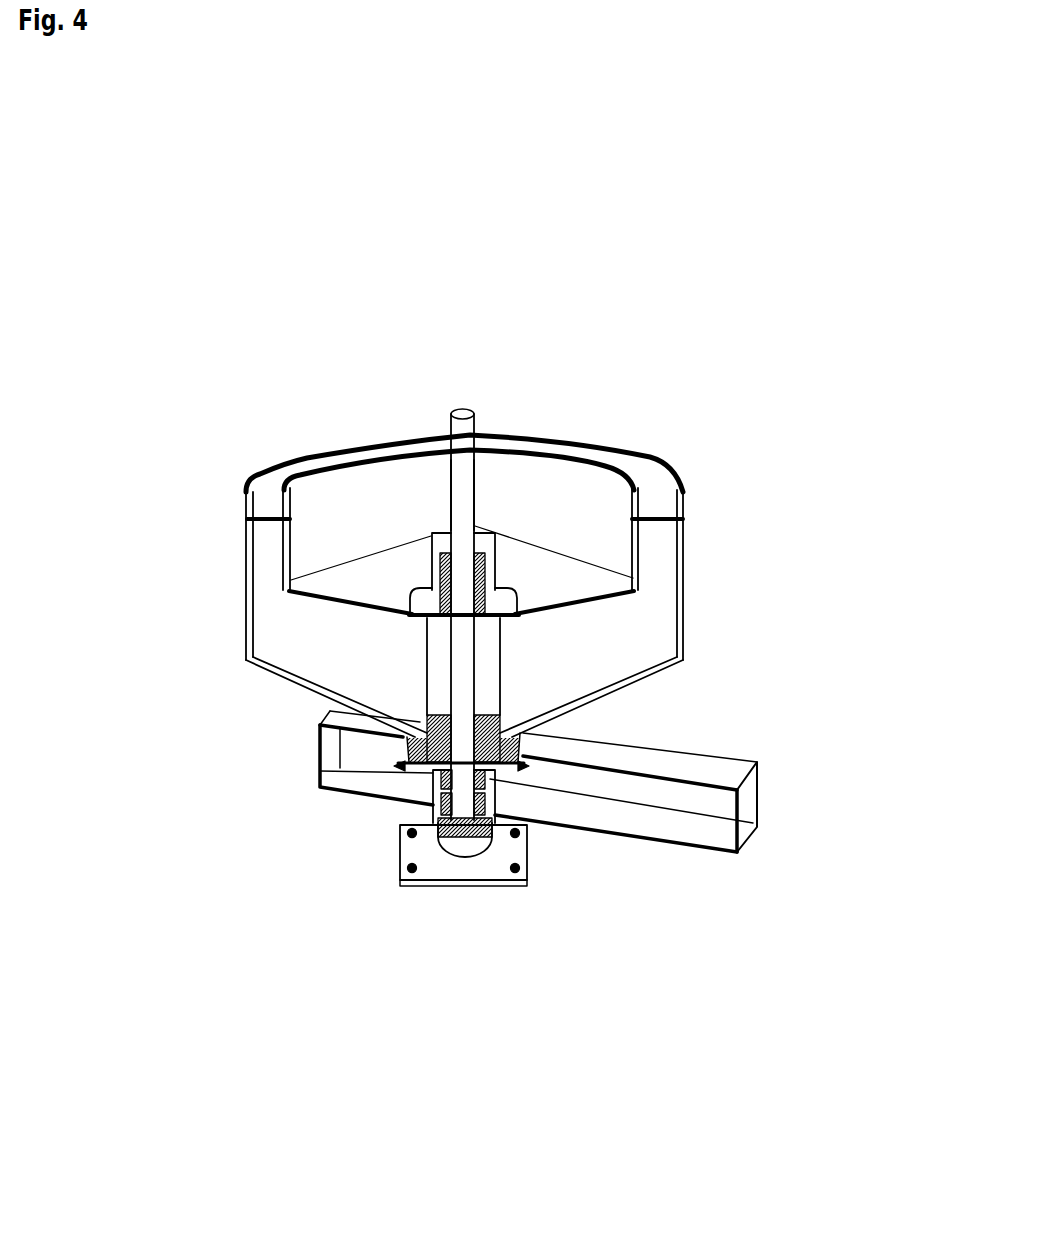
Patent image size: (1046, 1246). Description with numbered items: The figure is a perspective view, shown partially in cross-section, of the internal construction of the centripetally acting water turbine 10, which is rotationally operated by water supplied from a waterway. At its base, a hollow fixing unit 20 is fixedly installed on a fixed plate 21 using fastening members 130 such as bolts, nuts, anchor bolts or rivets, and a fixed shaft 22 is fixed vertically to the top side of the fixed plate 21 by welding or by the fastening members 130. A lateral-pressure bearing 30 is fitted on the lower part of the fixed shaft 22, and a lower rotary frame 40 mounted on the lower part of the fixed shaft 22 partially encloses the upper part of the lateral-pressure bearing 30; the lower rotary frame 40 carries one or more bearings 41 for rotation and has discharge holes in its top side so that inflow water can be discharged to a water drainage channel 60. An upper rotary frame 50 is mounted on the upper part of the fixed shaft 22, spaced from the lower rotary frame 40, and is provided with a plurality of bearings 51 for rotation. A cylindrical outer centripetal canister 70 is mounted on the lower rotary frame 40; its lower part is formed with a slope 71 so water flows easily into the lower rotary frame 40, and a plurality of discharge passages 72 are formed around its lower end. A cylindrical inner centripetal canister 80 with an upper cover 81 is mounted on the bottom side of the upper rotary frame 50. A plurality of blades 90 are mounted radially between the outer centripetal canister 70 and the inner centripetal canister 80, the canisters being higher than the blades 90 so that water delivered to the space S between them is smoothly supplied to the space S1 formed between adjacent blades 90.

The water turbine 10 is at (350, 214).
The fixing unit 20 is at (467, 398).
The fixed plate 21 is at (445, 858).
The fixed shaft 22 is at (467, 500).
The lateral-pressure bearing 30 is at (447, 886).
The lower rotary frame 40 is at (433, 800).
The bearings 41 is at (493, 778).
The upper rotary frame 50 is at (493, 547).
The bearings 51 is at (637, 595).
The water drainage channel 60 is at (668, 780).
The outer centripetal canister 70 is at (410, 426).
The slope 71 is at (290, 688).
The discharge passages 72 is at (397, 765).
The inner centripetal canister 80 is at (356, 449).
The upper cover 81 is at (363, 575).
The blades 90 is at (660, 505).
The fastening members 130 is at (425, 762).
The space S is at (438, 430).
The space S1 is at (672, 492).